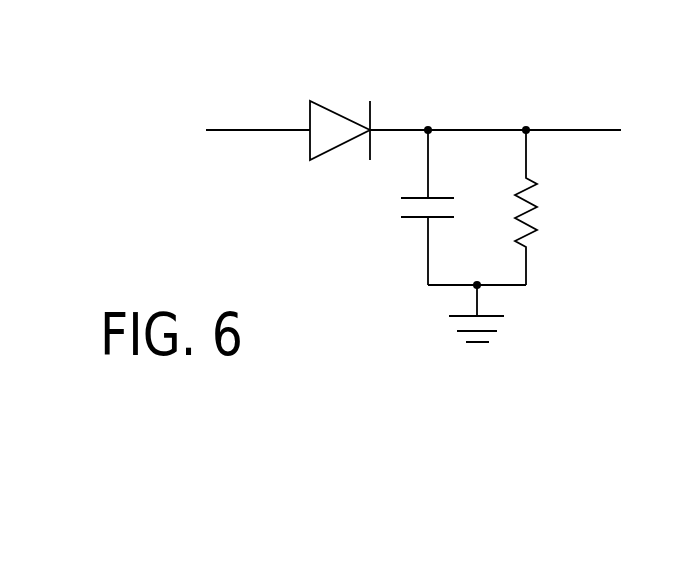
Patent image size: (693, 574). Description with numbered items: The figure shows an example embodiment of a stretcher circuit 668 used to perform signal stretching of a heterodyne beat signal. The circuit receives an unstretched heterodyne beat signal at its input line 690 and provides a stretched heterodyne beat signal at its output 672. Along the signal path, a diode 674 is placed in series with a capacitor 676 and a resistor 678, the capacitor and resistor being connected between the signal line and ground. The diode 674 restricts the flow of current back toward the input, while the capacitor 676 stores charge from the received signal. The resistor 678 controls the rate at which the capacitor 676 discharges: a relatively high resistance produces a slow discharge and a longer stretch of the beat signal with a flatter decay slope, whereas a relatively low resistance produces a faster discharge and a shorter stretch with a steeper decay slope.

The stretcher circuit 668 is at (220, 197).
The input line 690 is at (233, 129).
The diode 674 is at (322, 102).
The output 672 is at (587, 130).
The capacitor 676 is at (408, 218).
The resistor 678 is at (527, 238).